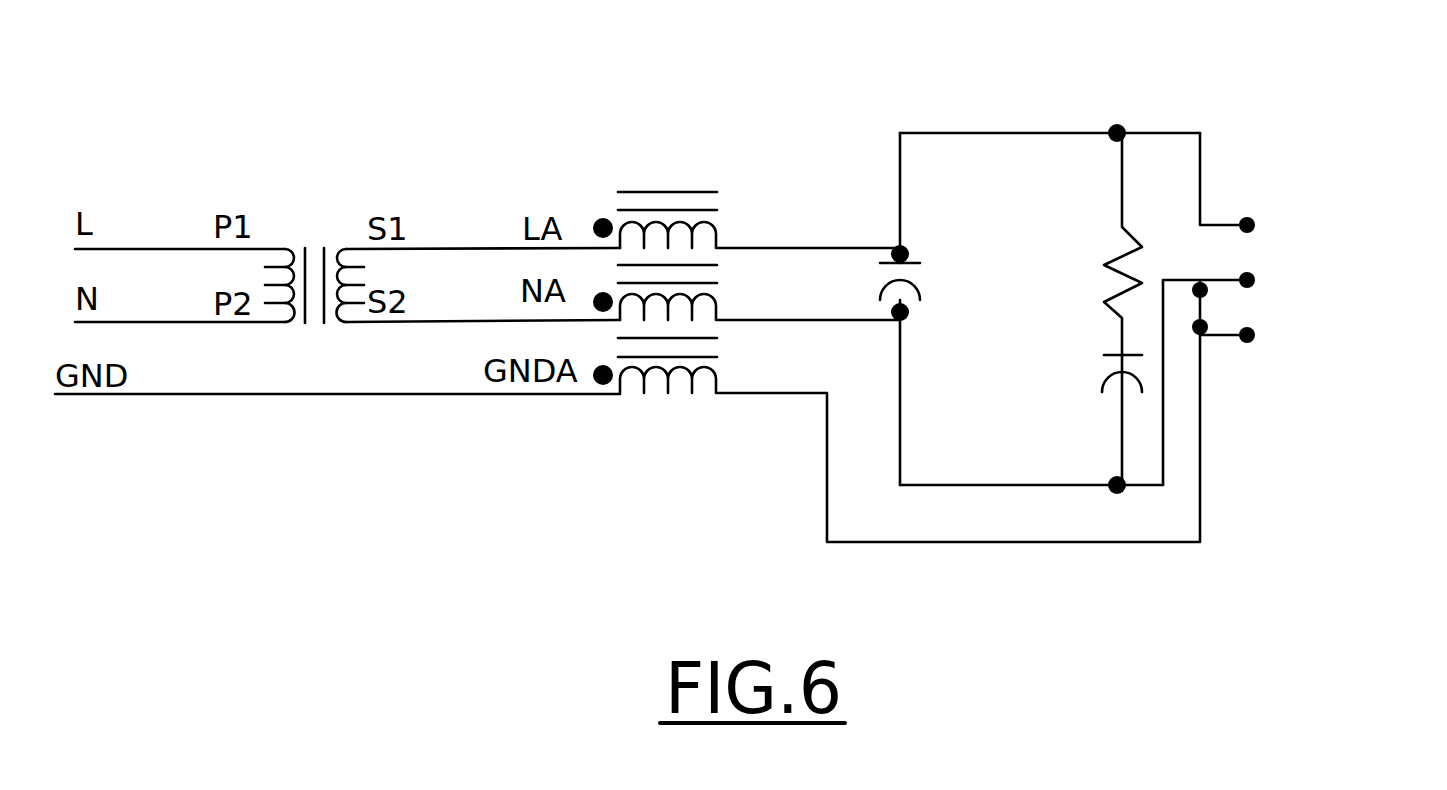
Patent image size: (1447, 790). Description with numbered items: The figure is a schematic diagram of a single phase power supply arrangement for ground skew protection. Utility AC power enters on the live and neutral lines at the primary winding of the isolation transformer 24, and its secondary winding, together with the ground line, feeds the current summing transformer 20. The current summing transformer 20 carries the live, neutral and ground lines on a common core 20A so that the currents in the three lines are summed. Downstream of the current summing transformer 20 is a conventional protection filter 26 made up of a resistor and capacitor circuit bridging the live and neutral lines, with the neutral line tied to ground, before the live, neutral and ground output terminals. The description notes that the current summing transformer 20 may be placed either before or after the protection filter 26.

The current summing transformer 20 is at (699, 220).
The choke core 20A is at (643, 132).
The isolation transformer 24 is at (288, 228).
The protection filter 26 is at (1163, 113).